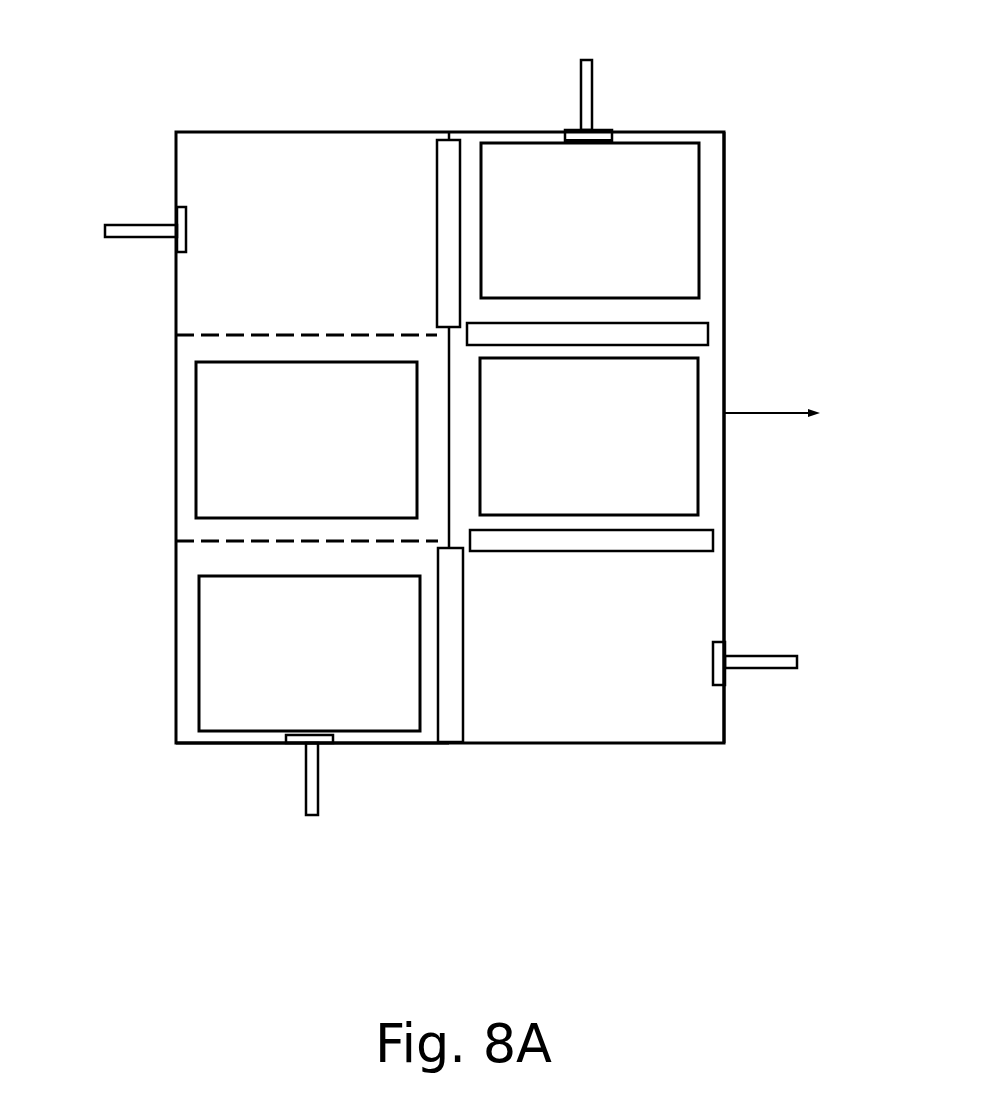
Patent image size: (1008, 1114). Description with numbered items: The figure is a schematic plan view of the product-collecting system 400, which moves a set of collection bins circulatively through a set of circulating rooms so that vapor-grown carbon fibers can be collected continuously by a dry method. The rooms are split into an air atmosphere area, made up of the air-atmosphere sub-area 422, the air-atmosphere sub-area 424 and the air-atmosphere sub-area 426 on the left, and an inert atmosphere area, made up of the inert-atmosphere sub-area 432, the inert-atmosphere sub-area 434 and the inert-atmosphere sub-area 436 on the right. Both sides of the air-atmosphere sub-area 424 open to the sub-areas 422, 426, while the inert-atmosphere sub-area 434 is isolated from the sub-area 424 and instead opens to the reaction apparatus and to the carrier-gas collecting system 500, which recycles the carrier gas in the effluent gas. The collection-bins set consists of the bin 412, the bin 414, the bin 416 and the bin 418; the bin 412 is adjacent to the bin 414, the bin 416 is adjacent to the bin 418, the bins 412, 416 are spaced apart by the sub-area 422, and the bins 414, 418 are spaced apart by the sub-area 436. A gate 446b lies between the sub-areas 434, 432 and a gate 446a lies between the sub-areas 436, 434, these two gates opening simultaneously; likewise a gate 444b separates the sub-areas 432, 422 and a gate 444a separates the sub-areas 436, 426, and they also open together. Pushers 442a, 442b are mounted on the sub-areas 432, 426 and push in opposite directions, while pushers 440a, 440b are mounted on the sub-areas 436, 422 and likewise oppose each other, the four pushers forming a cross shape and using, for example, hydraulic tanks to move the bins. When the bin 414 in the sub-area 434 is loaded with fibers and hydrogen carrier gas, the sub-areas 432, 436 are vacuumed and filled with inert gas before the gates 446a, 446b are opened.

The product-collecting system 400 is at (186, 78).
The bin 412 is at (543, 237).
The bin 414 is at (547, 455).
The bin 416 is at (261, 458).
The bin 418 is at (266, 673).
The air-atmosphere sub-area 422 is at (208, 286).
The air-atmosphere sub-area 424 is at (175, 445).
The air-atmosphere sub-area 426 is at (175, 667).
The inert-atmosphere sub-area 432 is at (724, 262).
The inert-atmosphere sub-area 434 is at (724, 470).
The inert-atmosphere sub-area 436 is at (702, 613).
The pusher 440a is at (792, 667).
The pusher 440b is at (128, 229).
The pusher 442a is at (318, 800).
The pusher 442b is at (580, 73).
The gate 444a is at (455, 723).
The gate 444b is at (430, 138).
The gate 446a is at (715, 532).
The gate 446b is at (715, 330).
The carrier-gas collecting system 500 is at (801, 417).